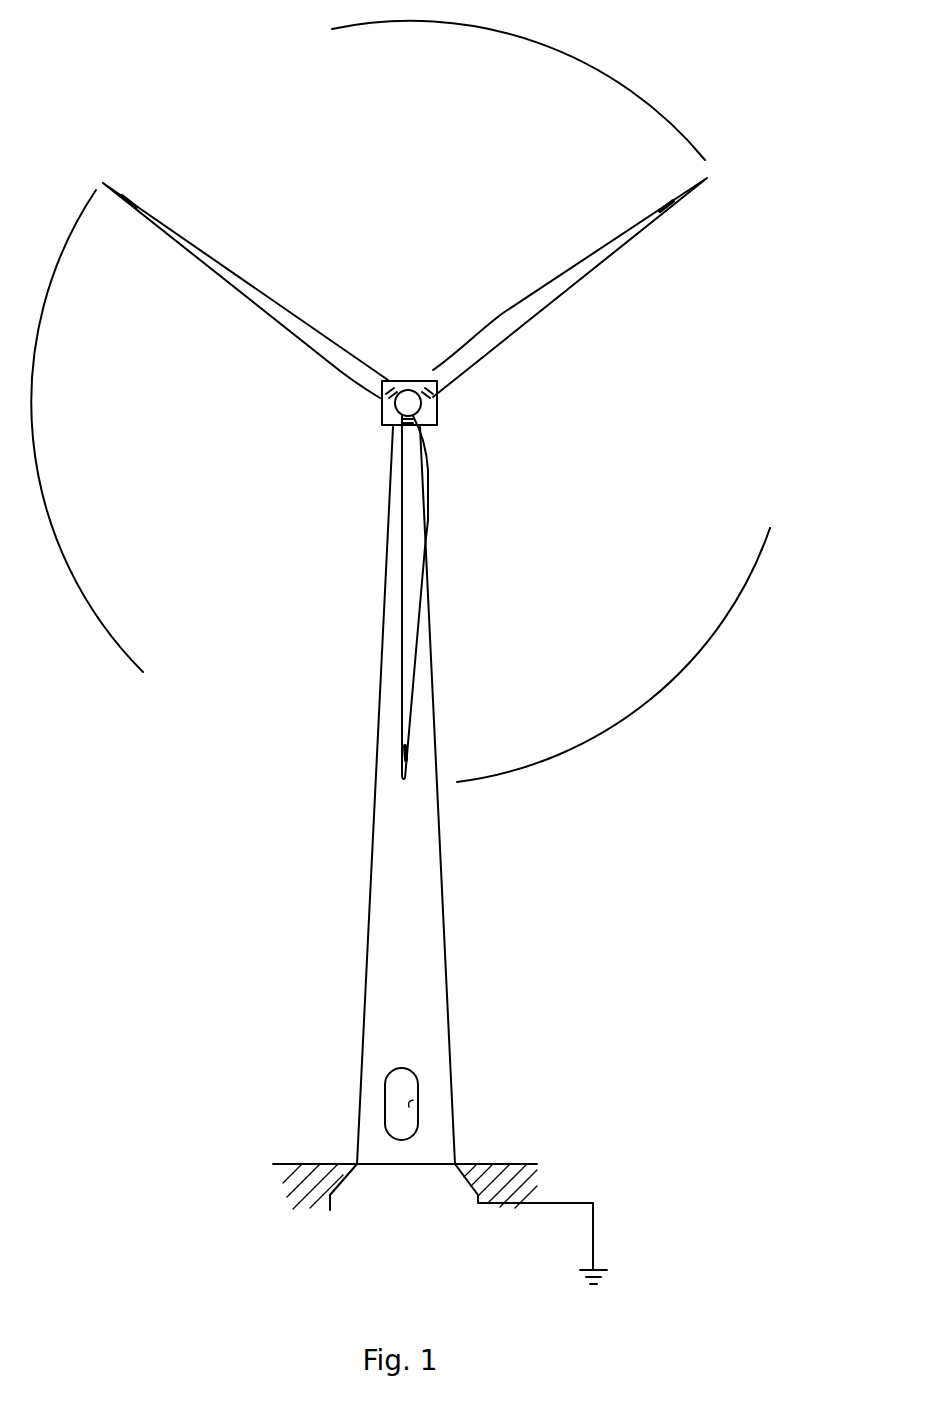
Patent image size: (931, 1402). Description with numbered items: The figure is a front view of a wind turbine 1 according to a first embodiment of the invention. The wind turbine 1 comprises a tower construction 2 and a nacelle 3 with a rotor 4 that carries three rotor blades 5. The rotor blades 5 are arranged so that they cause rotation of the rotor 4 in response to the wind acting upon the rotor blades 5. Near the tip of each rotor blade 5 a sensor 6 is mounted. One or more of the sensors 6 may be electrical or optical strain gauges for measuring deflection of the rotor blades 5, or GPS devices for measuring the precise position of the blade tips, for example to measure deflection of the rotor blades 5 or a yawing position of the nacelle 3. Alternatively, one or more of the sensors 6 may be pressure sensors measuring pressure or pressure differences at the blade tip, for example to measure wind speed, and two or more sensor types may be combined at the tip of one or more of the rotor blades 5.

The wind turbine 1 is at (665, 896).
The tower construction 2 is at (367, 988).
The nacelle 3 is at (428, 412).
The rotor 4 is at (408, 405).
The rotor blade 5 is at (297, 330).
The sensor 6 is at (133, 200).